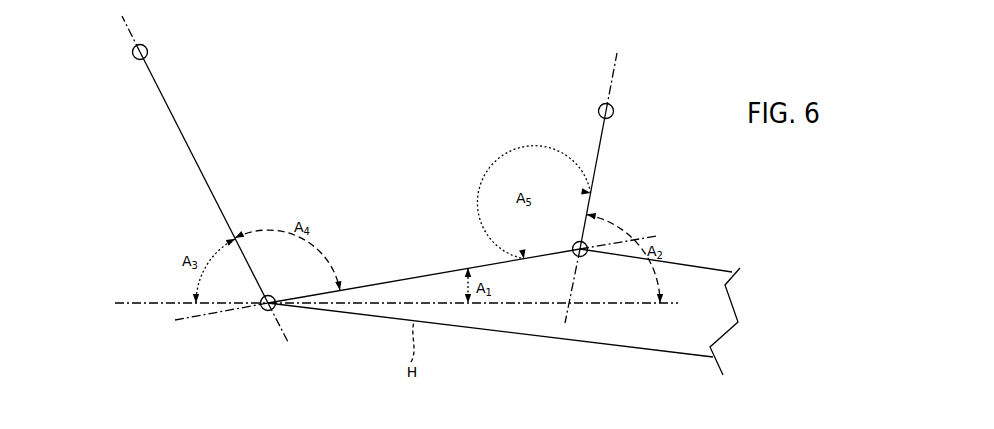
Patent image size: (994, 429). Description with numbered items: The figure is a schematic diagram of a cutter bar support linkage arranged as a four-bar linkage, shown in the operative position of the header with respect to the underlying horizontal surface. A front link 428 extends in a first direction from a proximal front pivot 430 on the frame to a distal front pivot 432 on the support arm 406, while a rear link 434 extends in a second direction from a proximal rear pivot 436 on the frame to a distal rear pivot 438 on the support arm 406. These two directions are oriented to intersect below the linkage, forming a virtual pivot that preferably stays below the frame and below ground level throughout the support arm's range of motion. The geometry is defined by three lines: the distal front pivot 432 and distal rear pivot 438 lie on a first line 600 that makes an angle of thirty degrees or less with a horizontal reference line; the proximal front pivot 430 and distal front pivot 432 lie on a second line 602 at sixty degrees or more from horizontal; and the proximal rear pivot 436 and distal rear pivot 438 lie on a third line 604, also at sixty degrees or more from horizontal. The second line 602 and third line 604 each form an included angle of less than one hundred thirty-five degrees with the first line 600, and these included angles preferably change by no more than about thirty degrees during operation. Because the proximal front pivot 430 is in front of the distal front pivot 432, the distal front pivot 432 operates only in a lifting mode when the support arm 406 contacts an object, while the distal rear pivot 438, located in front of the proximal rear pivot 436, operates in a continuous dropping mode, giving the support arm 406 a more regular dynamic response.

The support arm 406 is at (657, 334).
The front link 428 is at (595, 155).
The proximal front pivot 430 is at (614, 113).
The distal front pivot 432 is at (586, 256).
The rear link 434 is at (192, 148).
The proximal rear pivot 436 is at (134, 58).
The distal rear pivot 438 is at (261, 311).
The first line 600 is at (201, 320).
The second line 602 is at (612, 84).
The third line 604 is at (143, 22).